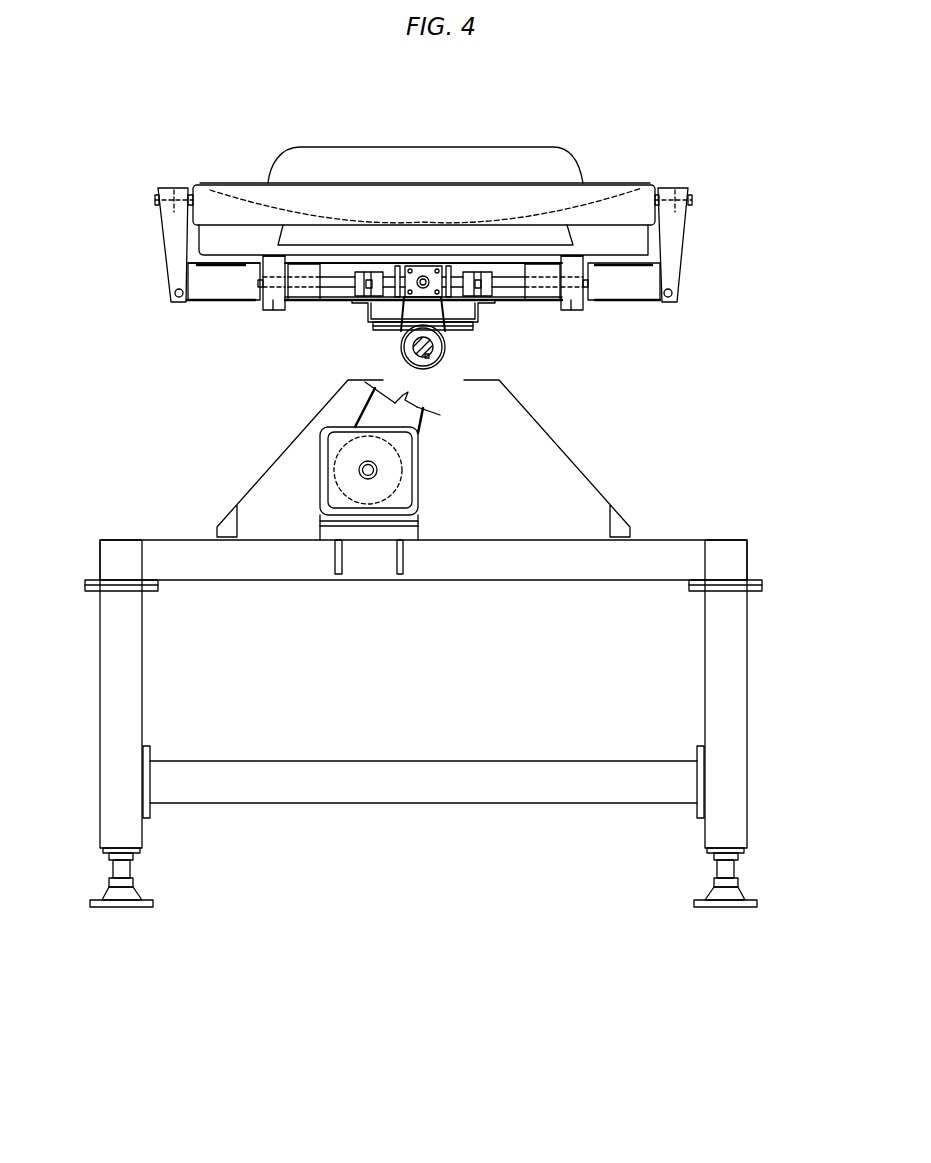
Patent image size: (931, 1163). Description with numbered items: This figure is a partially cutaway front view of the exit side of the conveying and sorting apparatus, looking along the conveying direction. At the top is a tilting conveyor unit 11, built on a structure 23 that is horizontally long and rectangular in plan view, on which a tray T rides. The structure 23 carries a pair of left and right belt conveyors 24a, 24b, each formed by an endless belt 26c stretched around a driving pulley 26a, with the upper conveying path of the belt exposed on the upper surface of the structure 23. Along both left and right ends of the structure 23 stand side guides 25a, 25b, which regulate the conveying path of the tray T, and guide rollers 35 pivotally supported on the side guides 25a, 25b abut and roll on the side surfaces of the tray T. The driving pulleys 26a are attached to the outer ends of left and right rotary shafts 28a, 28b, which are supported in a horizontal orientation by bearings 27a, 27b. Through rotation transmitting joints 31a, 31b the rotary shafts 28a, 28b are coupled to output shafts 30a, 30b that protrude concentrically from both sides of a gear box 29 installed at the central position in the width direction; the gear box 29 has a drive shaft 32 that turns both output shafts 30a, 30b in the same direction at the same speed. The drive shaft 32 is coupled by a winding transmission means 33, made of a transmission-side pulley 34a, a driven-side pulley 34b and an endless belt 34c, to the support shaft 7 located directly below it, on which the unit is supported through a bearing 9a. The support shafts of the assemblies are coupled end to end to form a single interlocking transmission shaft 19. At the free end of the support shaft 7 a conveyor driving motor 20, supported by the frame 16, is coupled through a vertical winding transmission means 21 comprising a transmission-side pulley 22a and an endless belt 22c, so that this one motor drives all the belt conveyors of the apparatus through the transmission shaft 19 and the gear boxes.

The tilting conveyor unit 11 is at (712, 213).
The tray T is at (635, 245).
The frame 16 is at (485, 568).
The interlocking transmission shaft 19 is at (432, 360).
The conveyor driving motor 20 is at (407, 493).
The winding transmission means 21 is at (354, 415).
The transmission-side pulley 22a is at (343, 460).
The endless belt 22c is at (422, 427).
The support shaft 7 is at (432, 347).
The bearing 9a is at (445, 368).
The structure 23 is at (228, 256).
The belt conveyor 24a is at (578, 250).
The belt conveyor 24b is at (271, 250).
The side guide 25a is at (675, 237).
The side guide 25b is at (175, 247).
The driving pulley 26a is at (255, 292).
The endless belt 26c is at (273, 308).
The bearing 27a is at (545, 264).
The bearing 27b is at (307, 264).
The rotary shaft 28a is at (513, 277).
The rotary shaft 28b is at (337, 277).
The gear box 29 is at (436, 266).
The output shaft 30a is at (450, 266).
The output shaft 30b is at (398, 265).
The rotation transmitting joint 31a is at (485, 295).
The rotation transmitting joint 31b is at (357, 285).
The drive shaft 32 is at (423, 266).
The winding transmission means 33 is at (452, 312).
The transmission-side pulley 34a is at (407, 266).
The driven-side pulley 34b is at (405, 347).
The endless belt 34c is at (405, 310).
The guide roller 35 is at (167, 192).